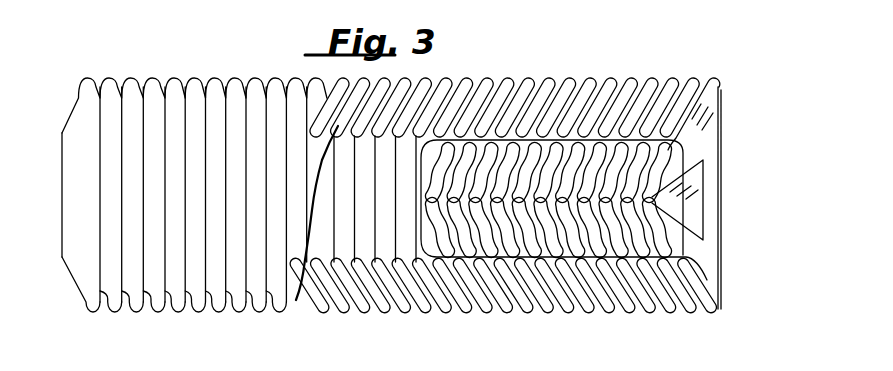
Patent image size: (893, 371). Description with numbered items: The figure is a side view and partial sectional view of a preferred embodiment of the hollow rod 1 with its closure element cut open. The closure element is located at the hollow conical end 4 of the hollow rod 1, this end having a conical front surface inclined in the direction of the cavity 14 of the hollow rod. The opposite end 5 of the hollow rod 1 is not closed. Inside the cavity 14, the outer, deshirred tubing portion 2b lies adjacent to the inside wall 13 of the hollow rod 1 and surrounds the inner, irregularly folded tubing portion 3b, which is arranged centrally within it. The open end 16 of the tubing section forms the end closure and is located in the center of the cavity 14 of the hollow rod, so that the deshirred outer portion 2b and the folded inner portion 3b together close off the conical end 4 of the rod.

The hollow rod 1 is at (698, 80).
The opposite end 5 is at (60, 152).
The outer, deshirred tubing portion 2b is at (669, 149).
The inner, irregularly folded tubing portion 3b is at (651, 172).
The open end of the tubing section 16 is at (698, 191).
The hollow conical end 4 is at (702, 282).
The inside wall 13 is at (367, 253).
The cavity 14 is at (390, 244).